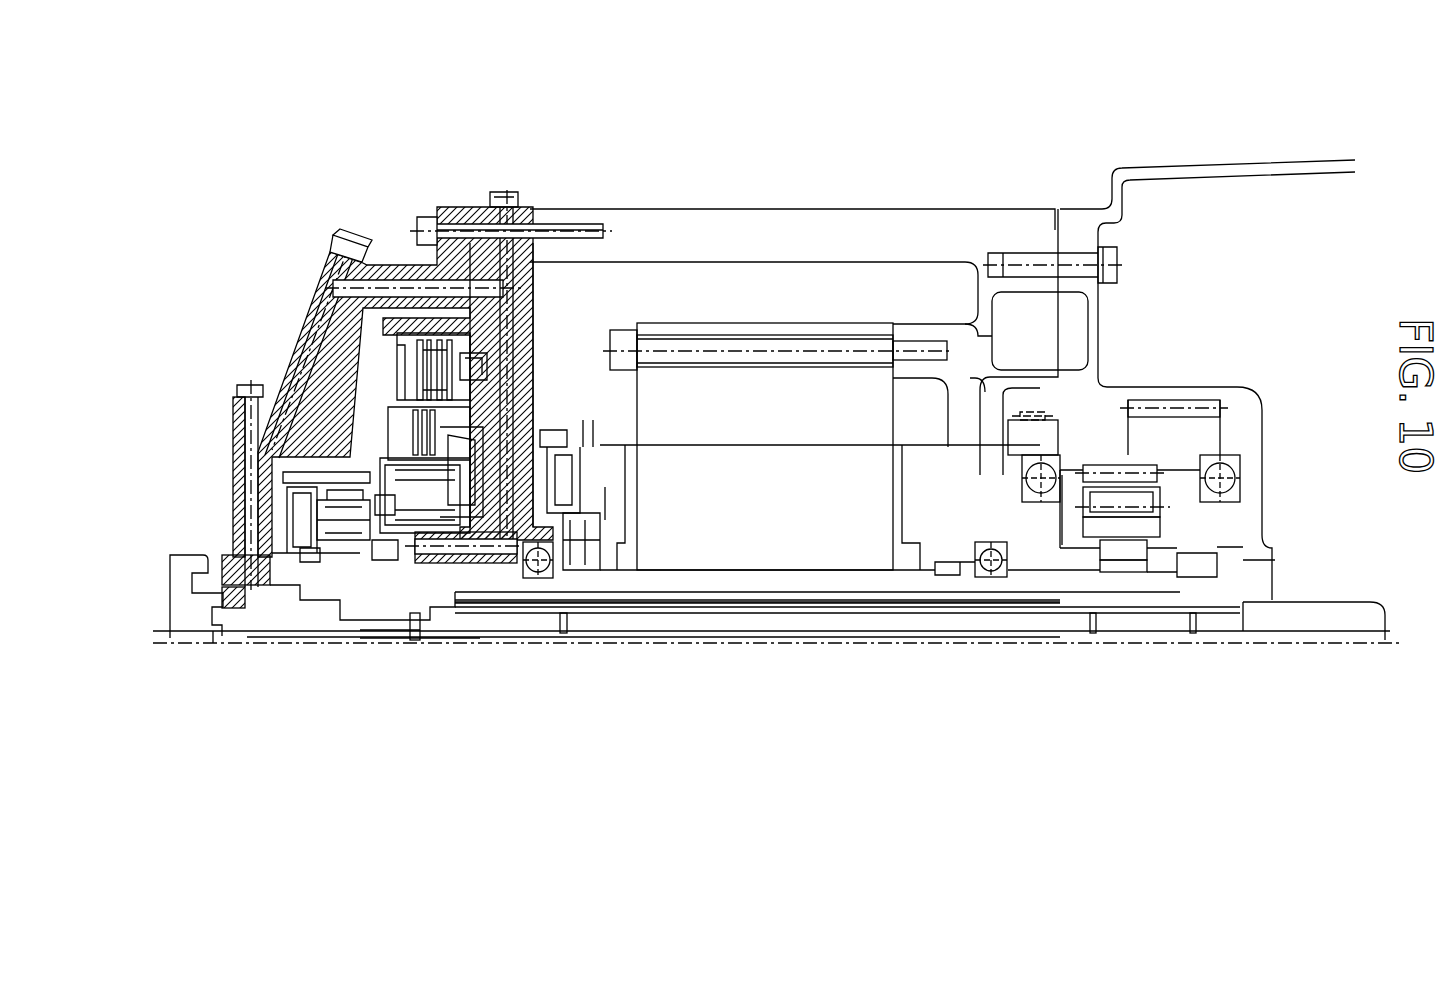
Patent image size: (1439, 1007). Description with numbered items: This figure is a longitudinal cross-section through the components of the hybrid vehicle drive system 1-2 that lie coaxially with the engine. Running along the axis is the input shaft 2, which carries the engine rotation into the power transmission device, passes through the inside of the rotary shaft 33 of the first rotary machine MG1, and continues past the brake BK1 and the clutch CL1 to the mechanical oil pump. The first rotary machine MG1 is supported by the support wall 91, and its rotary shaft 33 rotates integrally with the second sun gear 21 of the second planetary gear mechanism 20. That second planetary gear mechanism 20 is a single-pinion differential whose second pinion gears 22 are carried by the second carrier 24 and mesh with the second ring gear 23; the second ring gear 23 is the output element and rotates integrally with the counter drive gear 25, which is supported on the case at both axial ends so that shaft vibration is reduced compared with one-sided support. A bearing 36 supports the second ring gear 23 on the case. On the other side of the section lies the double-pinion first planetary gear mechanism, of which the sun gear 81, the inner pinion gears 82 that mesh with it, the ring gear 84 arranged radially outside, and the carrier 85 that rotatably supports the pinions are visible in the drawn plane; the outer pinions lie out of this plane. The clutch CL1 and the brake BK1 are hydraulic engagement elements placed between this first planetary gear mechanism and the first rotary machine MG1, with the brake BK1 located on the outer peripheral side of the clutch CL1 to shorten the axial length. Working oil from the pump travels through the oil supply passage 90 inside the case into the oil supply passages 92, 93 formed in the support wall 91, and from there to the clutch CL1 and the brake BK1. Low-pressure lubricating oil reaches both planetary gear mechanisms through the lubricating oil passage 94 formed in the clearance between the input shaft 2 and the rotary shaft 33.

The hybrid vehicle drive system 1-2 is at (950, 160).
The input shaft 2 is at (1287, 615).
The second planetary gear mechanism 20 is at (1103, 440).
The second sun gear 21 is at (1100, 561).
The second pinion gears 22 is at (1122, 563).
The second ring gear 23 is at (1150, 472).
The second carrier 24 is at (1157, 553).
The counter drive gear 25 is at (1217, 403).
The rotary shaft 33 is at (962, 568).
The bearing 36 is at (1022, 471).
The sun gear 81 is at (357, 533).
The inner pinion gears 82 is at (343, 485).
The ring gear 84 is at (303, 482).
The carrier 85 is at (310, 555).
The oil supply passage 90 is at (303, 318).
The support wall 91 is at (533, 296).
The oil supply passage 92 is at (508, 346).
The oil supply passage 93 is at (487, 370).
The lubricating oil passage 94 is at (902, 600).
The brake BK1 is at (393, 442).
The clutch CL1 is at (404, 388).
The first rotary machine MG1 is at (820, 446).